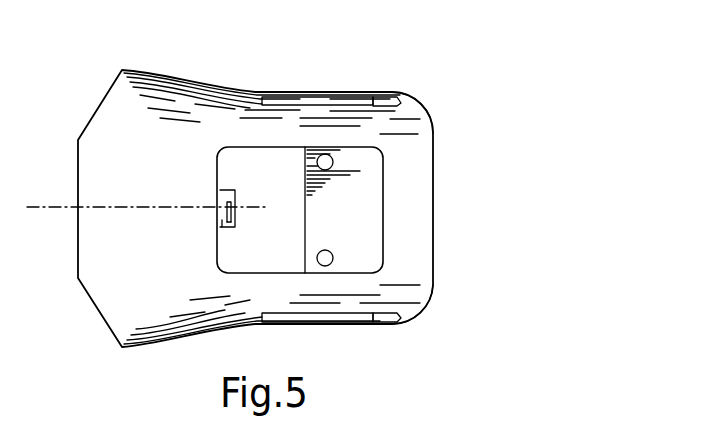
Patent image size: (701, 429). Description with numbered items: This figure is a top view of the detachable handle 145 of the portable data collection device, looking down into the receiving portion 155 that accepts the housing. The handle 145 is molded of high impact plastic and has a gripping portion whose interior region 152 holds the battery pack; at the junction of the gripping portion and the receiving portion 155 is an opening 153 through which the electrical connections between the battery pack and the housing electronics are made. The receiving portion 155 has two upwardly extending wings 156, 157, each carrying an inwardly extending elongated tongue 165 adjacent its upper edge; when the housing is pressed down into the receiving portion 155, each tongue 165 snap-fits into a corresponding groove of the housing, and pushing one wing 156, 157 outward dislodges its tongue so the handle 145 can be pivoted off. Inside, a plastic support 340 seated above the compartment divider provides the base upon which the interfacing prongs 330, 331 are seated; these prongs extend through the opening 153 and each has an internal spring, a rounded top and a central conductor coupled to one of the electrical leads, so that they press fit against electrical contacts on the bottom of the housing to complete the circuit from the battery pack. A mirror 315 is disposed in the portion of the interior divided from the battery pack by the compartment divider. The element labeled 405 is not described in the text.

The handle 145 is at (458, 131).
The interior region 152 is at (277, 233).
The opening 153 is at (217, 178).
The receiving portion 155 is at (436, 226).
The wing 156 is at (418, 110).
The wing 157 is at (415, 310).
The elongated tongue 165 is at (388, 101).
The mirror 315 is at (233, 201).
The interfacing prong 330 is at (333, 258).
The interfacing prong 331 is at (333, 162).
The plastic support 340 is at (357, 198).
The contact spring 405 is at (223, 228).